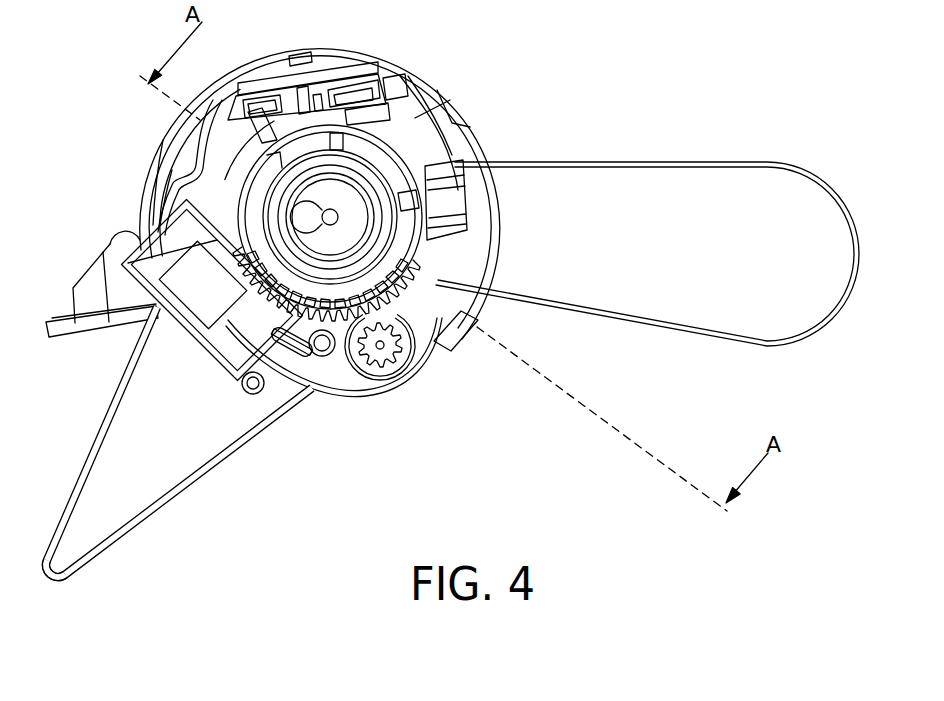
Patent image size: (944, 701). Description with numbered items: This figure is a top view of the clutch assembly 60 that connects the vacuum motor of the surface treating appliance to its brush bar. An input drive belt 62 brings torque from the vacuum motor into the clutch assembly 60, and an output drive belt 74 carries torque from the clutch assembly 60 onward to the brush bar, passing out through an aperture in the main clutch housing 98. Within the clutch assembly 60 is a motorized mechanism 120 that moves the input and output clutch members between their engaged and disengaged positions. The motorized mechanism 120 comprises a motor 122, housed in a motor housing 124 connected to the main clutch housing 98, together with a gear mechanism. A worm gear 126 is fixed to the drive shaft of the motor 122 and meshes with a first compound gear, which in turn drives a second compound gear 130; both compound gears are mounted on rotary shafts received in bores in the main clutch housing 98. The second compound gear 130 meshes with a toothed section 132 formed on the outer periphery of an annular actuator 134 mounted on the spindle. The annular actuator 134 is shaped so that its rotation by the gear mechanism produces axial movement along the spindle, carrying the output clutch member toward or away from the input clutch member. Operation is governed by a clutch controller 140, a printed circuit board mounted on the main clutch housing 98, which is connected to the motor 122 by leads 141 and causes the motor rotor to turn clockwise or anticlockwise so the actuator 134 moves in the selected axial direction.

The clutch assembly 60 is at (505, 90).
The input drive belt 62 is at (92, 575).
The output drive belt 74 is at (830, 322).
The main clutch housing 98 is at (437, 330).
The motorized mechanism 120 is at (215, 435).
The motor 122 is at (200, 318).
The motor housing 124 is at (124, 236).
The worm gear 126 is at (298, 385).
The second compound gear 130 is at (400, 362).
The toothed section 132 is at (468, 250).
The annular actuator 134 is at (413, 207).
The clutch controller 140 is at (336, 70).
The leads 141 is at (168, 165).